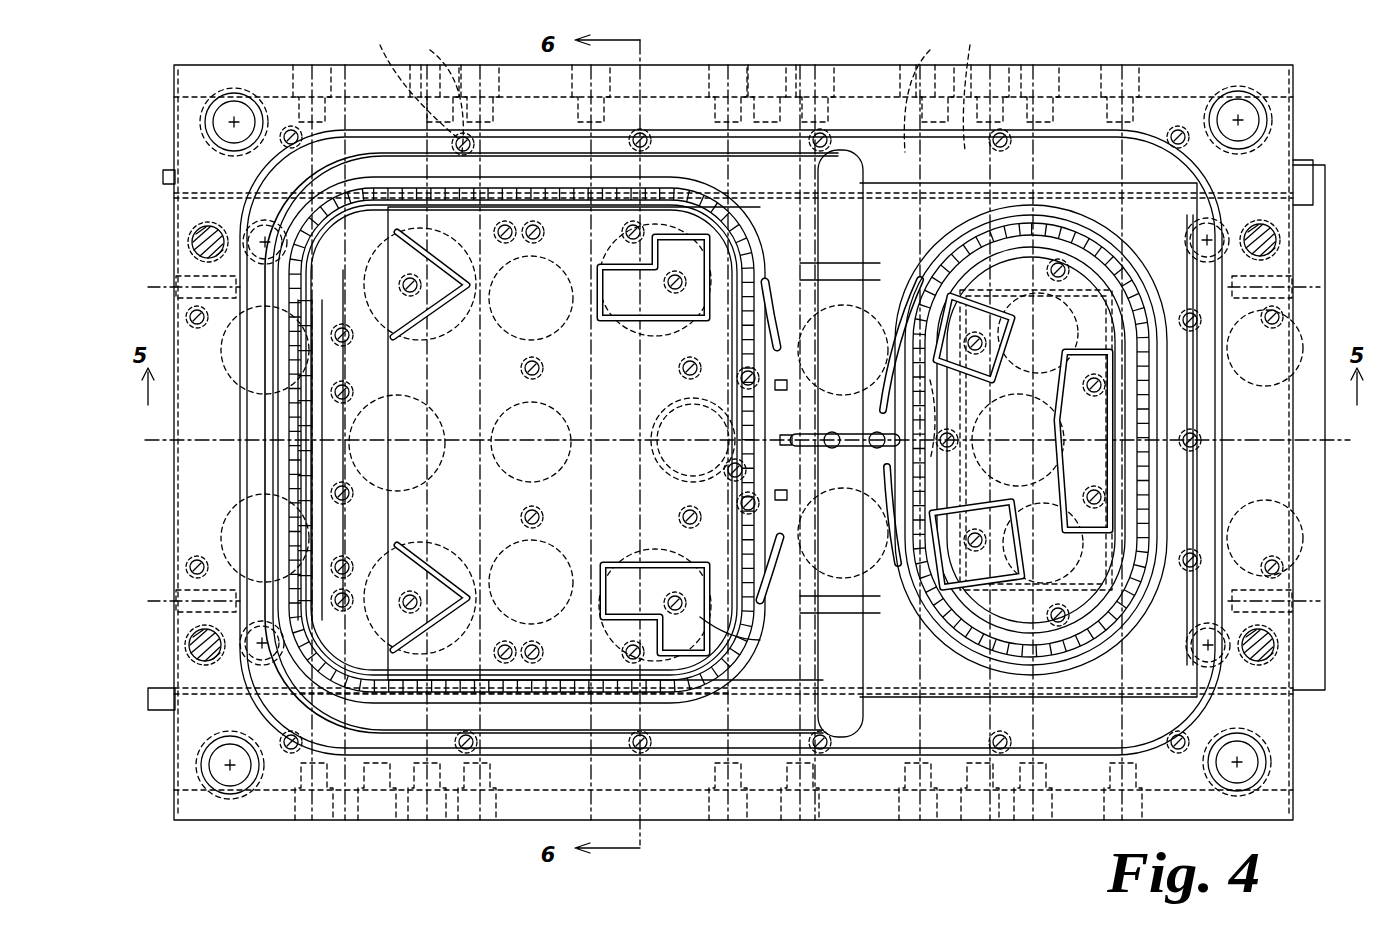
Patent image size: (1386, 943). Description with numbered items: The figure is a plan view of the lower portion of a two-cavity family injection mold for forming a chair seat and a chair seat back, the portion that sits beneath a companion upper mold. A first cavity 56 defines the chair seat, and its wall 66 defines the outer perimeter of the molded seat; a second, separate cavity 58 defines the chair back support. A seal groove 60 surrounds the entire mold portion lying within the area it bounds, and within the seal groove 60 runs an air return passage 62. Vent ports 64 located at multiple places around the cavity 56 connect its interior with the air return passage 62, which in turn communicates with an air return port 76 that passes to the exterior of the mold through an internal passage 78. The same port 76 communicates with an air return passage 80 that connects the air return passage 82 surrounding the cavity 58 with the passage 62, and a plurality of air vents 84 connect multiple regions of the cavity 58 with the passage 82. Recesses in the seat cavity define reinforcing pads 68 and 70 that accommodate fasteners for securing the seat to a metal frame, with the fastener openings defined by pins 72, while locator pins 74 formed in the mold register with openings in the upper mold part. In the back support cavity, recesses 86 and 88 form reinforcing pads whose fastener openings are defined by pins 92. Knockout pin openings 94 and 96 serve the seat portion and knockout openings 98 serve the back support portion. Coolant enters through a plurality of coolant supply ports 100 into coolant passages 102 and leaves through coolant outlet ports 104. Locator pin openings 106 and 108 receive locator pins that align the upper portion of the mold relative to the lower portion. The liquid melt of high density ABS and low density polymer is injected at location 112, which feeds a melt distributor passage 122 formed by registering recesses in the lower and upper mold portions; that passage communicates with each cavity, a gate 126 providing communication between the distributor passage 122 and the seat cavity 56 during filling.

The first cavity 56 is at (553, 440).
The second cavity 58 is at (1031, 440).
The seal groove 60 is at (690, 752).
The air return passage 62 is at (725, 625).
The vent ports 64 is at (548, 195).
The wall of the cavity 66 is at (733, 485).
The reinforcing pad 68 is at (612, 580).
The reinforcing pad 70 is at (430, 590).
The pins 72 is at (740, 620).
The locator pins 74 is at (540, 700).
The air return port 76 is at (770, 282).
The internal passage 78 is at (818, 195).
The air return passage 80 is at (870, 285).
The air return passage 82 is at (950, 300).
The air vents 84 is at (985, 300).
The recess 86 is at (1000, 300).
The recess 88 is at (1060, 412).
The pins 92 is at (1133, 415).
The knockout pin opening 94 is at (595, 560).
The knockout pin opening 96 is at (400, 540).
The knockout openings 98 is at (1200, 462).
The coolant supply ports 100 is at (675, 90).
The coolant passages 102 is at (673, 89).
The coolant outlet ports 104 is at (465, 820).
The locator pin opening 106 is at (1270, 655).
The locator pin opening 108 is at (175, 645).
The injection location 112 is at (920, 462).
The melt distributor passage 122 is at (920, 392).
The gate 126 is at (693, 440).